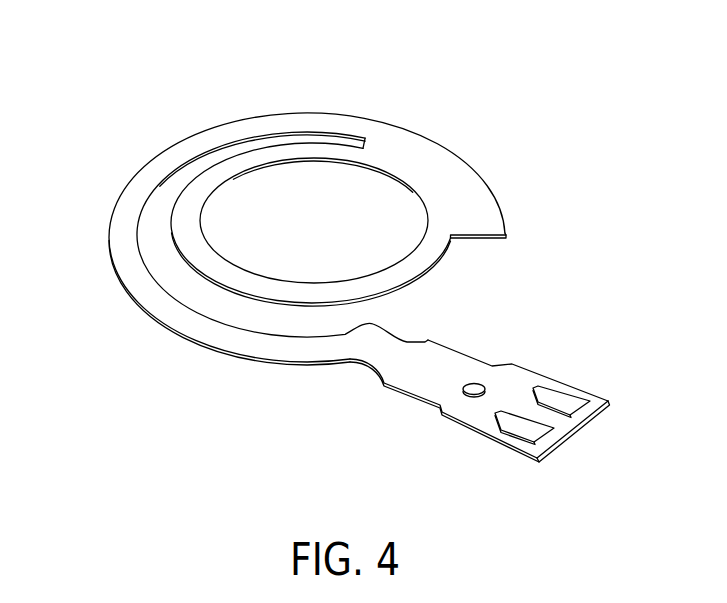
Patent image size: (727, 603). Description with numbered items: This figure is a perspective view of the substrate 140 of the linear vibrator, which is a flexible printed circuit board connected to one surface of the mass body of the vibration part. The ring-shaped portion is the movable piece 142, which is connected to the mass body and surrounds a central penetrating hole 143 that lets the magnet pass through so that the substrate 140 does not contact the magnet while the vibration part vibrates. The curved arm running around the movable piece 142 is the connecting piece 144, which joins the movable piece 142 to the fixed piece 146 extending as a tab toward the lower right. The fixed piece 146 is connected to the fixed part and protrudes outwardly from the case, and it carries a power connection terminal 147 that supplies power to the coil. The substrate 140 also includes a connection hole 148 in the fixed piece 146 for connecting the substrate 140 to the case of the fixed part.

The substrate 140 is at (126, 58).
The movable piece 142 is at (447, 213).
The penetrating hole 143 is at (397, 187).
The connecting piece 144 is at (178, 317).
The fixed piece 146 is at (525, 378).
The power connection terminal 147 is at (535, 430).
The connection hole 148 is at (474, 389).